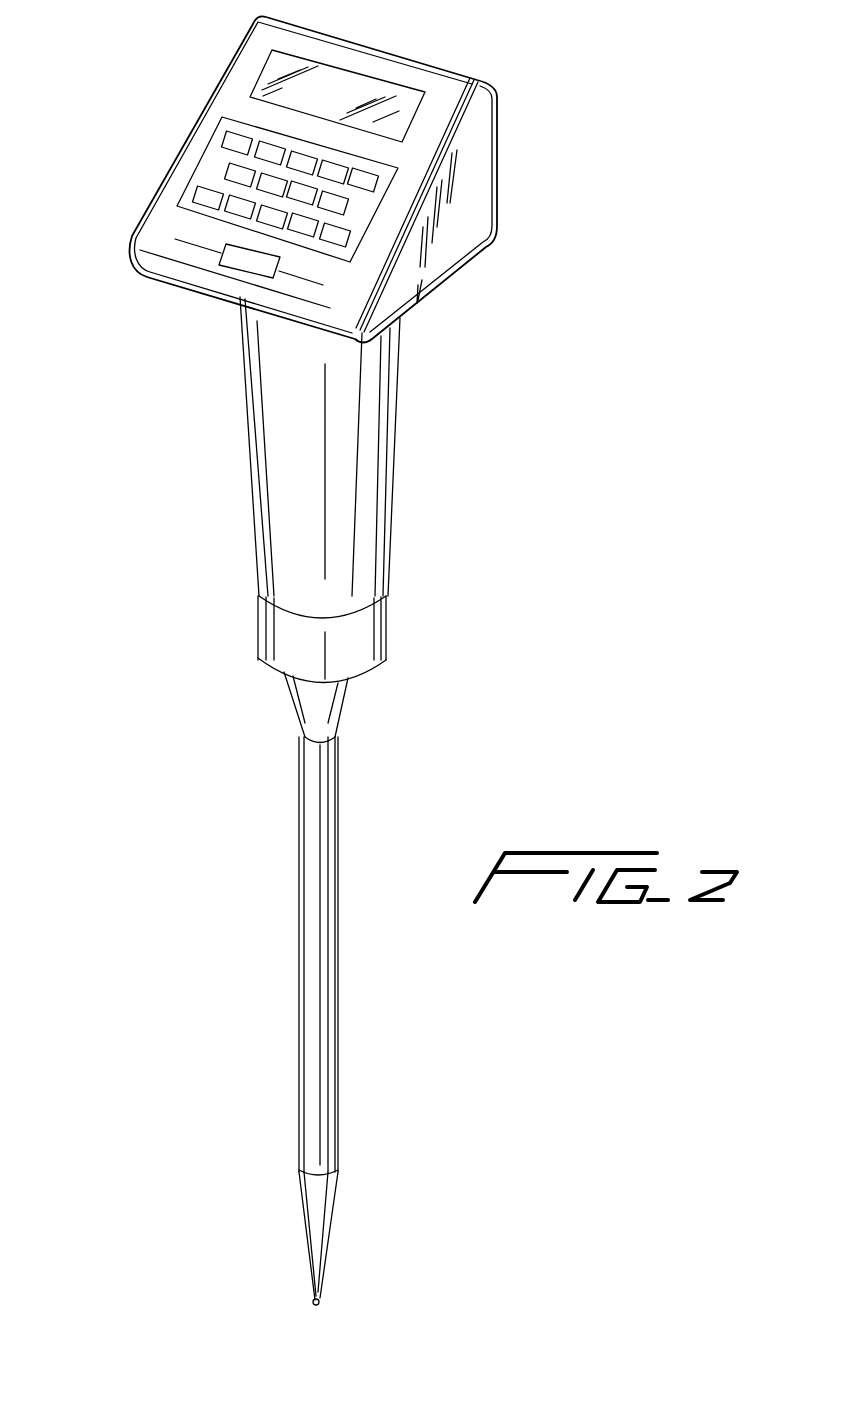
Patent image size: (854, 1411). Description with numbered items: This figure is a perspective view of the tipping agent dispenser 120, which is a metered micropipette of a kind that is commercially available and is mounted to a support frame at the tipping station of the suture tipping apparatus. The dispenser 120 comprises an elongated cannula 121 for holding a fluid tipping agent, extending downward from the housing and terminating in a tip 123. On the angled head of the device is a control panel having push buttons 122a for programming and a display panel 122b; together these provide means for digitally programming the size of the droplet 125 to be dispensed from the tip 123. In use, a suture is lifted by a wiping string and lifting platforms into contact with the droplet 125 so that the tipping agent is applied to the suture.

The tipping agent dispenser 120 is at (304, 680).
The elongated cannula 121 is at (302, 918).
The push buttons 122a is at (202, 173).
The display panel 122b is at (383, 82).
The tip 123 is at (307, 1225).
The droplet 125 is at (318, 1308).